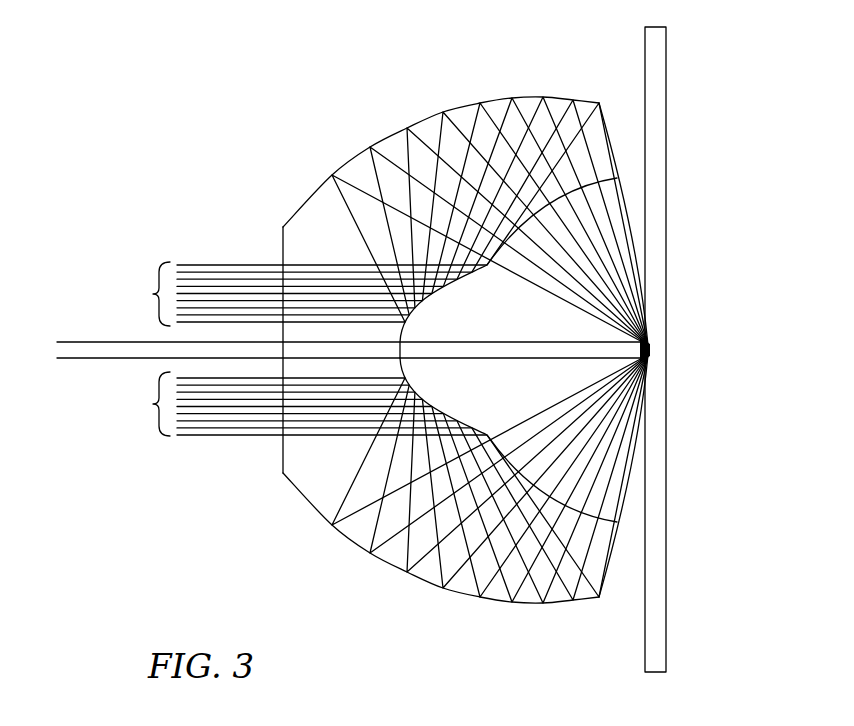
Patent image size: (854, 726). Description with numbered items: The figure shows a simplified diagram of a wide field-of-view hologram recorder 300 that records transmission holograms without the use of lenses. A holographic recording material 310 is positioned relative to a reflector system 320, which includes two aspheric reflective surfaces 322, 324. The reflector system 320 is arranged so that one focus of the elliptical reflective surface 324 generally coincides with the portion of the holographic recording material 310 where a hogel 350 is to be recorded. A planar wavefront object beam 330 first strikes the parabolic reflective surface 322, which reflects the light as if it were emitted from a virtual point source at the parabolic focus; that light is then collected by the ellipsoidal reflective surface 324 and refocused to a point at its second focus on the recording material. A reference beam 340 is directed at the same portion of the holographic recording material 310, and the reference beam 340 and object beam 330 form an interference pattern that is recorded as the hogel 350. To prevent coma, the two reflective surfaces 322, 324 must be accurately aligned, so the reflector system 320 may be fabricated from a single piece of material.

The recorder 300 is at (180, 146).
The holographic recording material 310 is at (667, 72).
The reflector system 320 is at (308, 530).
The reflective surface 322 is at (433, 297).
The reflective surface 324 is at (388, 134).
The object beam 330 is at (383, 350).
The reference beam 340 is at (74, 338).
The hogel 350 is at (688, 335).